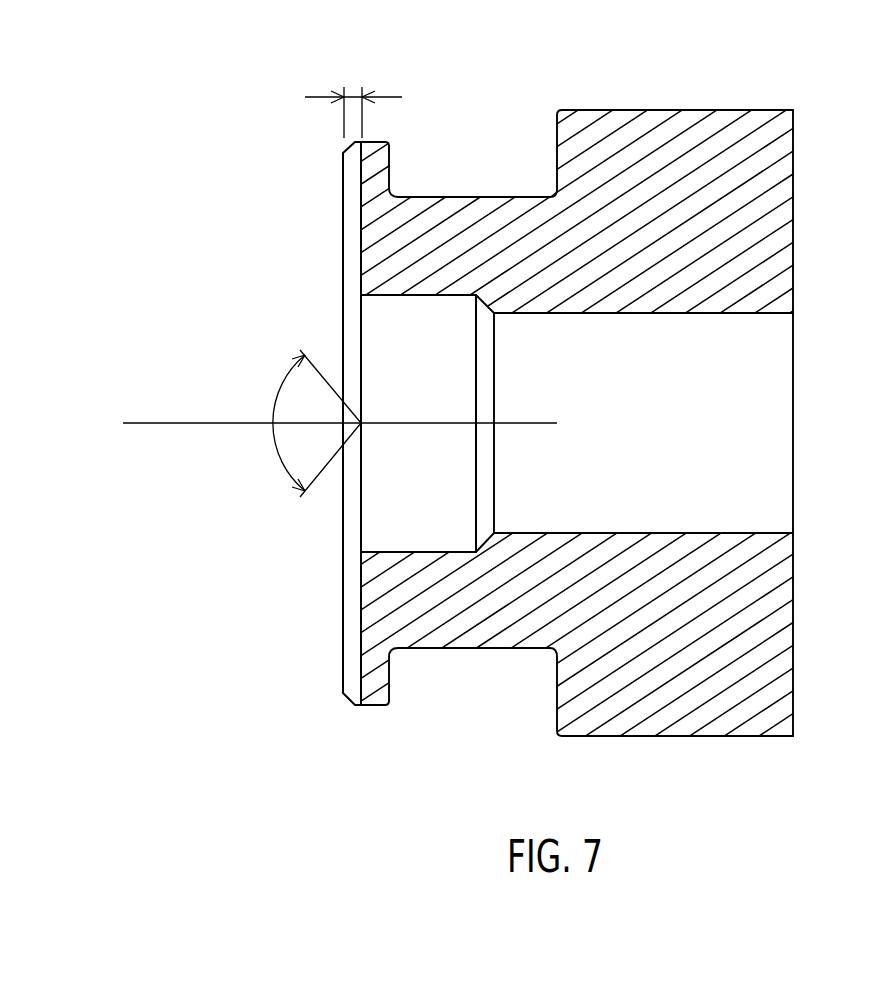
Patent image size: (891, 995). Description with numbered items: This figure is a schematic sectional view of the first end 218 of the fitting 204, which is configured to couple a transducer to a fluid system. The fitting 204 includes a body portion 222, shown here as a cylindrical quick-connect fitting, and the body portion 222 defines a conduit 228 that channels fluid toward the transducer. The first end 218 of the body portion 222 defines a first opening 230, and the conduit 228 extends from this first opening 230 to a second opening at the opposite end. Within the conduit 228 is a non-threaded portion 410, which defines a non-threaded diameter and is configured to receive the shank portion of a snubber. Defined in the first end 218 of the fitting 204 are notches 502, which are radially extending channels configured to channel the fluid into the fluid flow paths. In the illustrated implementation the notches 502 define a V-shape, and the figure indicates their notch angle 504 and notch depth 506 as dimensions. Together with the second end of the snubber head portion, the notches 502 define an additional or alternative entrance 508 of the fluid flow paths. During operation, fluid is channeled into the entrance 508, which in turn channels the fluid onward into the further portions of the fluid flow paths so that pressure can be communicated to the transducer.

The fitting 204 is at (700, 110).
The body portion 222 is at (765, 100).
The non-threaded portion 410 is at (752, 318).
The conduit 228 is at (380, 315).
The first opening 230 is at (383, 535).
The first end 218 is at (343, 190).
The entrance 508 is at (349, 247).
The notches 502 is at (358, 343).
The notch depth 506 is at (318, 97).
The notch angle 504 is at (273, 398).